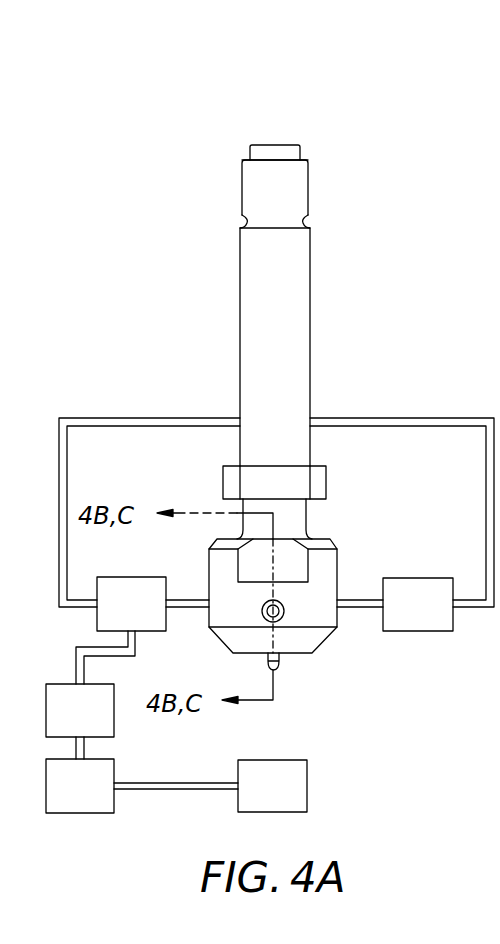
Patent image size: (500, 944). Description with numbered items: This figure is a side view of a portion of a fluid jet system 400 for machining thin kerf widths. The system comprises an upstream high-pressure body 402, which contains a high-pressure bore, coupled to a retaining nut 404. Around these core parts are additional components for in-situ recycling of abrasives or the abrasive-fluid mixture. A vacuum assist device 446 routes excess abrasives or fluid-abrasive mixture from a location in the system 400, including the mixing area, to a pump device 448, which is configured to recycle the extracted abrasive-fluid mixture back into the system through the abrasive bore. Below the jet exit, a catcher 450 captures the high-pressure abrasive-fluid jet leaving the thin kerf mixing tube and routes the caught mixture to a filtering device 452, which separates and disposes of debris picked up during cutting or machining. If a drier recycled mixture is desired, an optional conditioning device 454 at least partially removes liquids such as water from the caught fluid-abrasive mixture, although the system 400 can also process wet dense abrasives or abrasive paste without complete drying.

The fluid jet system 400 is at (337, 97).
The upstream high-pressure body 402 is at (308, 345).
The retaining nut 404 is at (337, 557).
The vacuum assist device 446 is at (437, 615).
The pump device 448 is at (150, 615).
The catcher 450 is at (291, 797).
The filtering device 452 is at (99, 797).
The conditioning device 454 is at (99, 721).